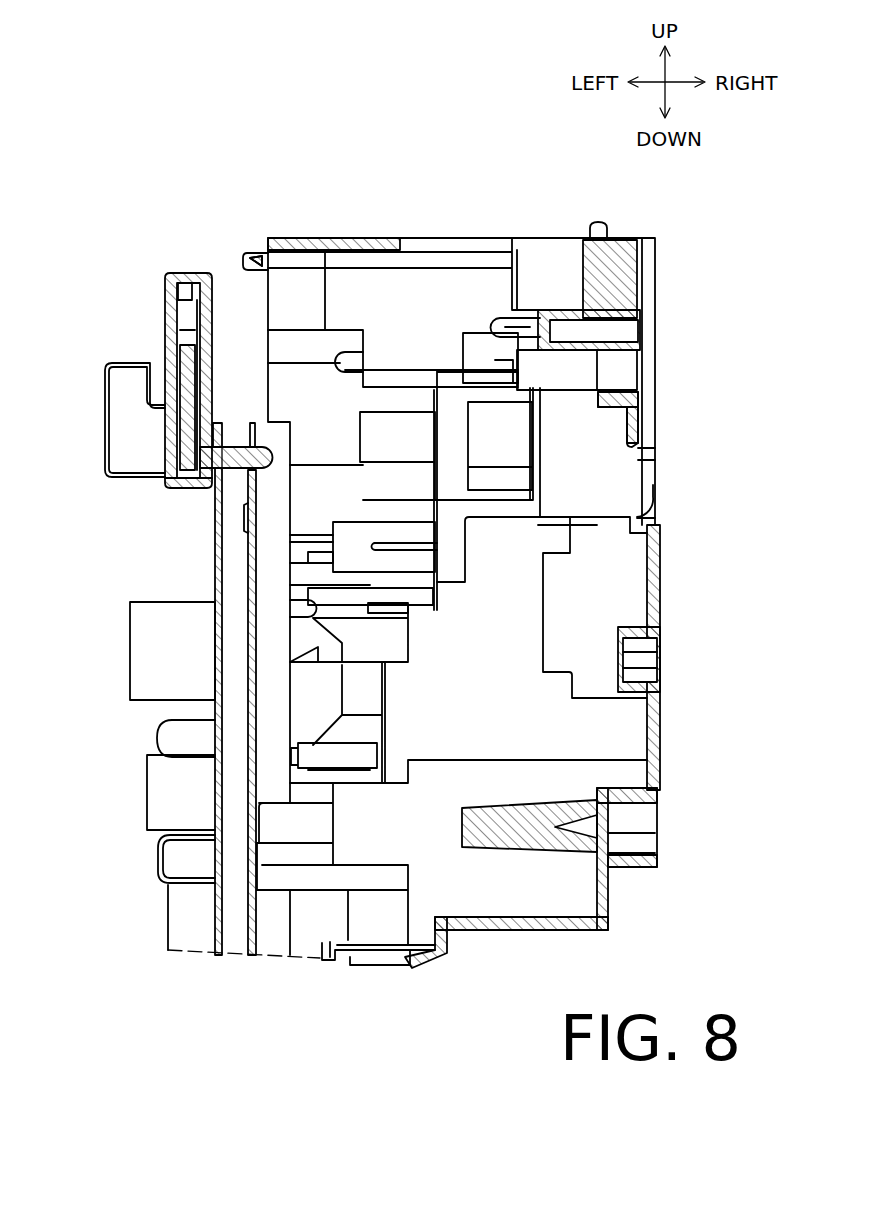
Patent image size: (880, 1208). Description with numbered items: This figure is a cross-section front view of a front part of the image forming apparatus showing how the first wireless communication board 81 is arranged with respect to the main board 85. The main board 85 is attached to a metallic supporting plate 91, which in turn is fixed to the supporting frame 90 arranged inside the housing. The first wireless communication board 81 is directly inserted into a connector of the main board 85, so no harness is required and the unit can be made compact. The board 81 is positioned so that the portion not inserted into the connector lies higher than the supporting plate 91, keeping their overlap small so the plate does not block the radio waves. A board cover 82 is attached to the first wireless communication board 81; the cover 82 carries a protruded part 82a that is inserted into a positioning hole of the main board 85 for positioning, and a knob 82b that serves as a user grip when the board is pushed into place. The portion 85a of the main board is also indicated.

The supporting frame 90 is at (440, 240).
The first wireless communication board 81 is at (192, 335).
The board cover 82 is at (93, 428).
The protruded part 82a is at (233, 462).
The knob 82b is at (113, 383).
The main board 85 is at (204, 540).
The engaging portion of plate 85a is at (233, 478).
The metallic supporting plate 91 is at (253, 913).